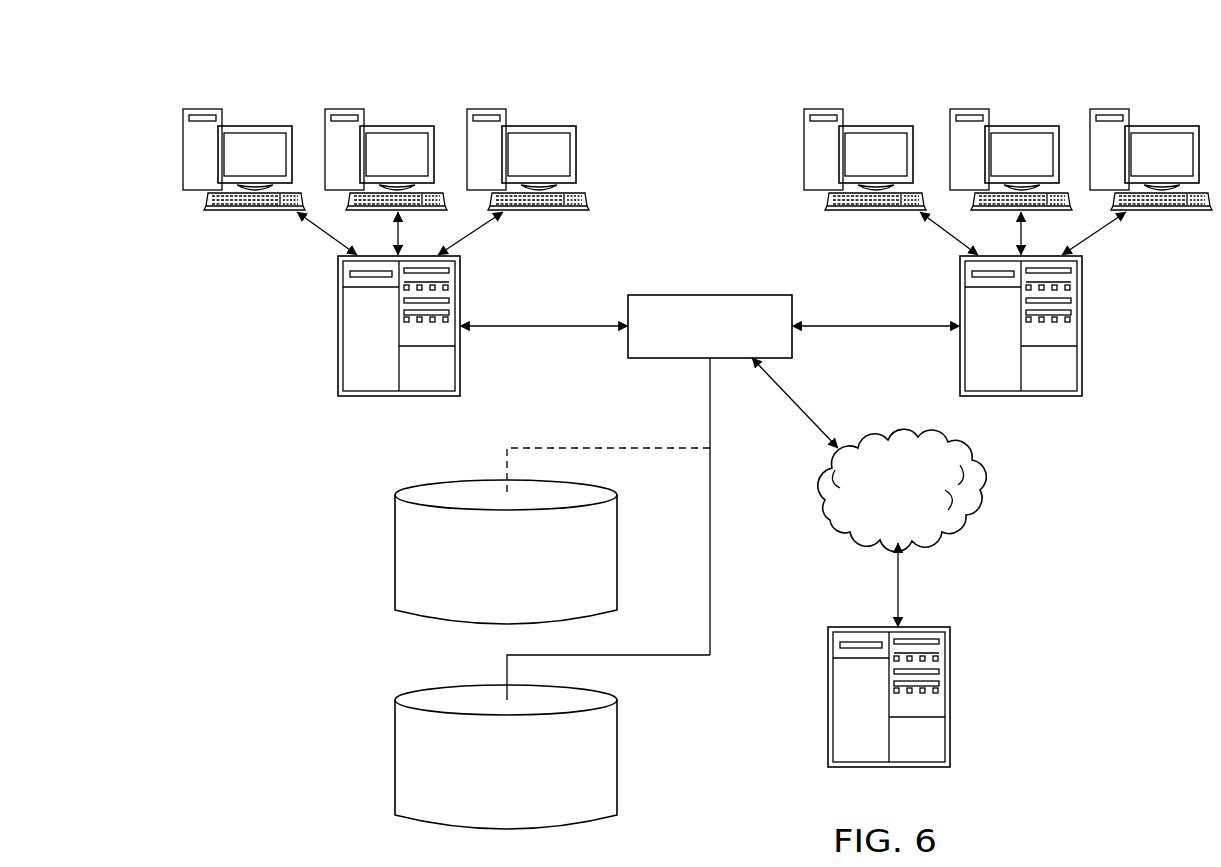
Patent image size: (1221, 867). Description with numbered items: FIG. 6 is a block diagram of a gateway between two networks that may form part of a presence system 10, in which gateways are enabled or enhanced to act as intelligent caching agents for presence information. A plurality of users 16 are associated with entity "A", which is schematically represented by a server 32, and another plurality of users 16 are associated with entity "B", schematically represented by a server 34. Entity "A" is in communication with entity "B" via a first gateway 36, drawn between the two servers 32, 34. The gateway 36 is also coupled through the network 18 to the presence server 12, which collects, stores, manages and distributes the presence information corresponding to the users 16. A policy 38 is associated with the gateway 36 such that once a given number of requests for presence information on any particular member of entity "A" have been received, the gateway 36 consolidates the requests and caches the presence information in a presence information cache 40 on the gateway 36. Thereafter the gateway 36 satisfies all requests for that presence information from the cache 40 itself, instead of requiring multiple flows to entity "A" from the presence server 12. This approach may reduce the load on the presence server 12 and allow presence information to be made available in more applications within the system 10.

The system 10 is at (686, 84).
The presence server 12 is at (870, 627).
The users 16 is at (251, 126).
The network 18 is at (930, 537).
The server 32 is at (338, 341).
The server 34 is at (1083, 342).
The gateway 36 is at (710, 295).
The policy 38 is at (395, 538).
The presence information cache 40 is at (395, 746).